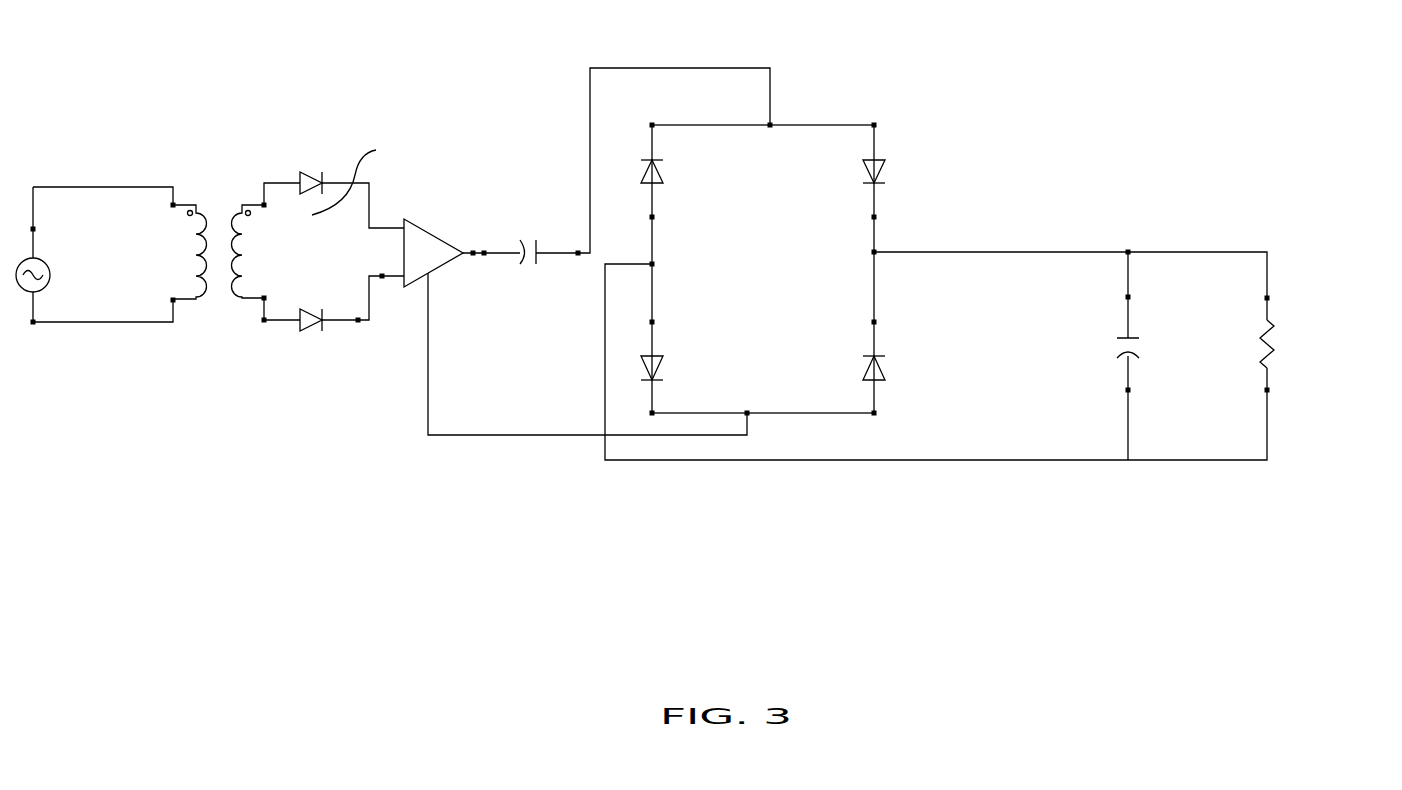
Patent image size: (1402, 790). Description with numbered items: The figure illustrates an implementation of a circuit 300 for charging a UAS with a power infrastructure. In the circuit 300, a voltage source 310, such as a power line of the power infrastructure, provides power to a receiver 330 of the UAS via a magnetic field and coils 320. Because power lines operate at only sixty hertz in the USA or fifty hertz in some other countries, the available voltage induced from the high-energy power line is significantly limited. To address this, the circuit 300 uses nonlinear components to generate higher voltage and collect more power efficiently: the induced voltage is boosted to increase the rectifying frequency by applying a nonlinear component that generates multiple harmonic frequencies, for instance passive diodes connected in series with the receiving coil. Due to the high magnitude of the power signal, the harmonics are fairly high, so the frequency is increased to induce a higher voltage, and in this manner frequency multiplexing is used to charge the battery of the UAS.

The circuit 300 is at (110, 44).
The voltage source 310 is at (102, 336).
The magnetic field and coils 320 is at (211, 400).
The receiver 330 is at (348, 442).